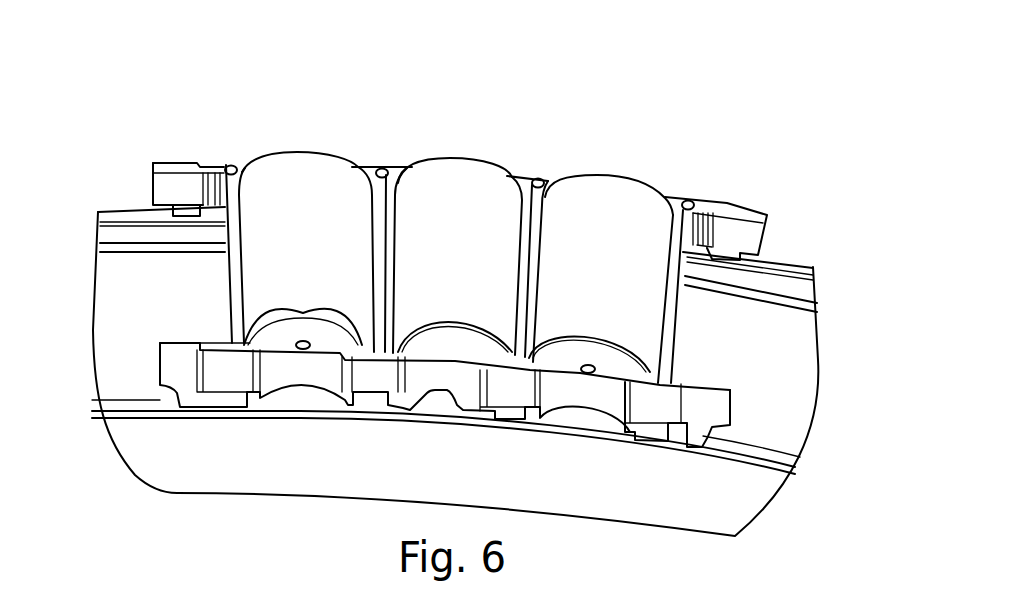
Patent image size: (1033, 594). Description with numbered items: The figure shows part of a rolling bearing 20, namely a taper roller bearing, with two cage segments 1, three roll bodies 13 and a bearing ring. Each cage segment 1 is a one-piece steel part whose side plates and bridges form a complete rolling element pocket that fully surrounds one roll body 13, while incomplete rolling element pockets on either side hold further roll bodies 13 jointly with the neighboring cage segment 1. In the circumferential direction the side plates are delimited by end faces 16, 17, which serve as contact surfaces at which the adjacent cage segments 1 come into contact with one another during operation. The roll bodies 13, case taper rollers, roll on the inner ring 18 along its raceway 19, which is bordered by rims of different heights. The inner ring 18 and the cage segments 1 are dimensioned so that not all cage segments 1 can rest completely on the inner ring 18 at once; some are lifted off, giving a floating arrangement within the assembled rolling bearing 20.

The cage segment 1 is at (166, 163).
The roll body 13 is at (308, 152).
The end face 16 is at (162, 367).
The end face 17 is at (733, 407).
The inner ring 18 is at (780, 260).
The raceway 19 is at (747, 350).
The rolling bearing 20 is at (793, 90).